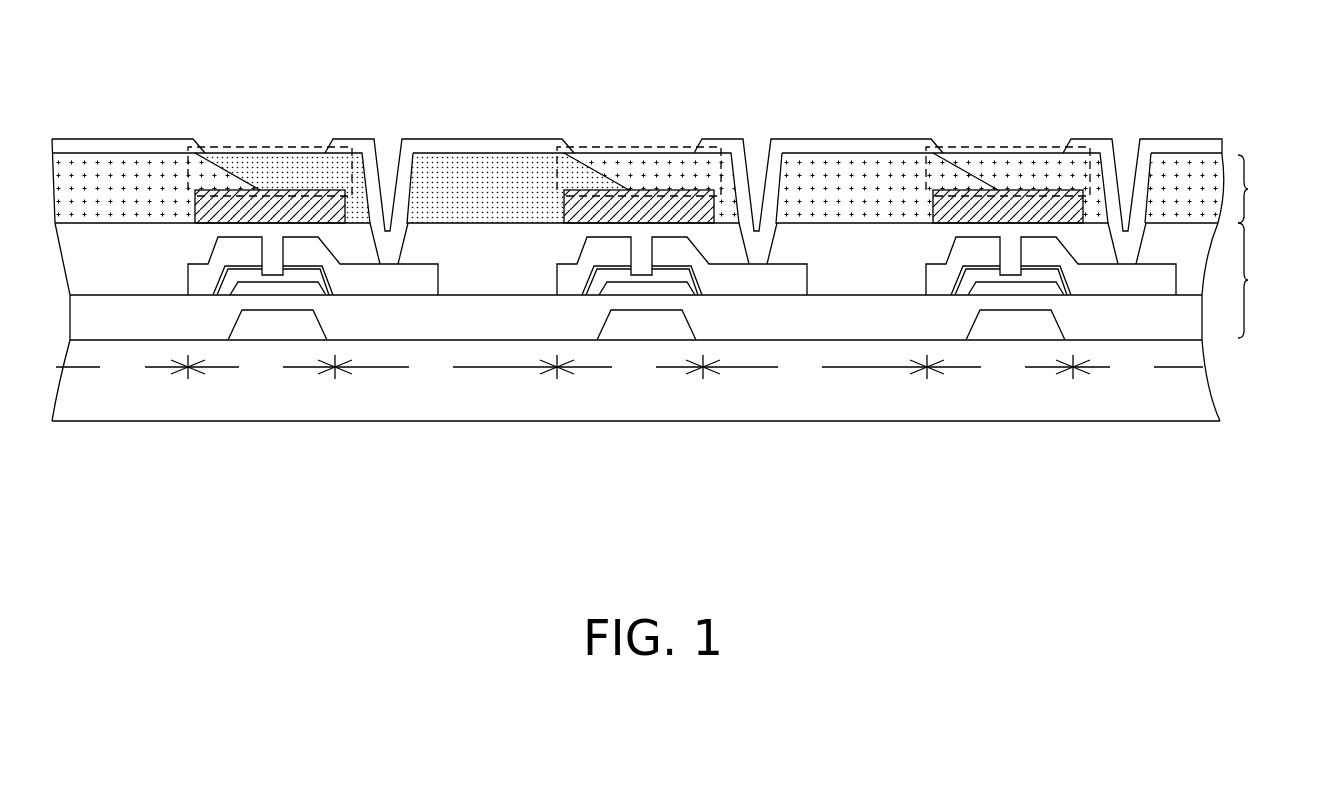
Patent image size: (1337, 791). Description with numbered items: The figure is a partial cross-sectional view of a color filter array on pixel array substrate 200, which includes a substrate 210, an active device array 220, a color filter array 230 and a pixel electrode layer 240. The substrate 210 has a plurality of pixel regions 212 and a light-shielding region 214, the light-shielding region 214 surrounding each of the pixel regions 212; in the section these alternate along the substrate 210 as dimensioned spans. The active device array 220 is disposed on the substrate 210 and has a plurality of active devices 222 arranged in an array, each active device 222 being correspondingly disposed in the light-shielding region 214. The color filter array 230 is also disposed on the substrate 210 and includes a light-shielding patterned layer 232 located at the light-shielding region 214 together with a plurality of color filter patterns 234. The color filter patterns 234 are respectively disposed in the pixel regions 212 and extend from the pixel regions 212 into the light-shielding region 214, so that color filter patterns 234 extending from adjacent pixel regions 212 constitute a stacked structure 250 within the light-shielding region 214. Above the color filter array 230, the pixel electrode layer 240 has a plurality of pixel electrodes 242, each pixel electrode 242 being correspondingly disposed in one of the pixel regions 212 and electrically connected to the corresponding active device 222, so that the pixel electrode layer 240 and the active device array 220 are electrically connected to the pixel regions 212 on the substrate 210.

The color filter array on pixel array substrate 200 is at (689, 289).
The substrate 210 is at (1203, 397).
The pixel regions 212 is at (629, 368).
The light-shielding region 214 is at (630, 368).
The active device array 220 is at (676, 281).
The active devices 222 is at (199, 248).
The color filter array 230 is at (674, 131).
The light-shielding patterned layer 232 is at (280, 198).
The color filter patterns 234 is at (90, 155).
The pixel electrode layer 240 is at (689, 139).
The pixel electrodes 242 is at (160, 145).
The stacked structure 250 is at (318, 147).